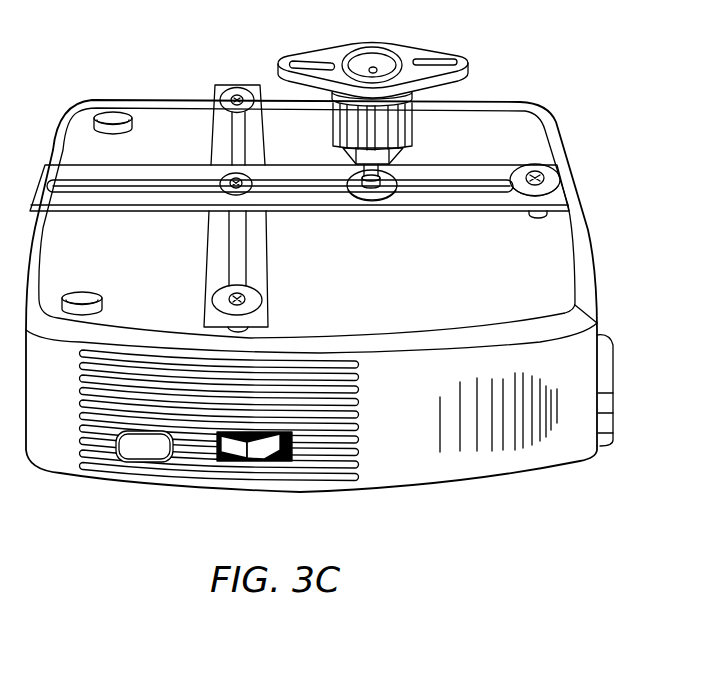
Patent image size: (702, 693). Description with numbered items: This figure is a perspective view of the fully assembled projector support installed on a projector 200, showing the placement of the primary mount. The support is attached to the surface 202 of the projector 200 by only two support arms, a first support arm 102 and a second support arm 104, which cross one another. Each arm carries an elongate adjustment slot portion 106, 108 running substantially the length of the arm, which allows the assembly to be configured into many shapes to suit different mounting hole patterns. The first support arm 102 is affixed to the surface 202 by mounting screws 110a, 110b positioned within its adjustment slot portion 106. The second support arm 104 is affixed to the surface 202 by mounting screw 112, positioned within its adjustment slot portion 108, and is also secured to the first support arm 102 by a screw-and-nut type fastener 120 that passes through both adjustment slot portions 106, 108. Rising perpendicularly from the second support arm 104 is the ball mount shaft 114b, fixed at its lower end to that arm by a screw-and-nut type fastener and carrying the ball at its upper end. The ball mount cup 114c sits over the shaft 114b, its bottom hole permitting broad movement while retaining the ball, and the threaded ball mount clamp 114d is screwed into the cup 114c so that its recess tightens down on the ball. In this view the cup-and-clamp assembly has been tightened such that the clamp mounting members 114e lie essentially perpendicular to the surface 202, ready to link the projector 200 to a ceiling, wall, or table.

The first support arm 102 is at (248, 130).
The second support arm 104 is at (93, 200).
The adjustment slot portion 106 is at (238, 151).
The adjustment slot portion 108 is at (155, 187).
The mounting screw 110a is at (232, 88).
The mounting screw 110b is at (245, 302).
The mounting screw 112 is at (537, 188).
The ball mount shaft 114b is at (386, 184).
The ball mount cup 114c is at (384, 132).
The ball mount clamp 114d is at (404, 58).
The clamp mounting members 114e is at (300, 77).
The fastener 120 is at (245, 190).
The projector 200 is at (418, 434).
The surface 202 is at (455, 328).